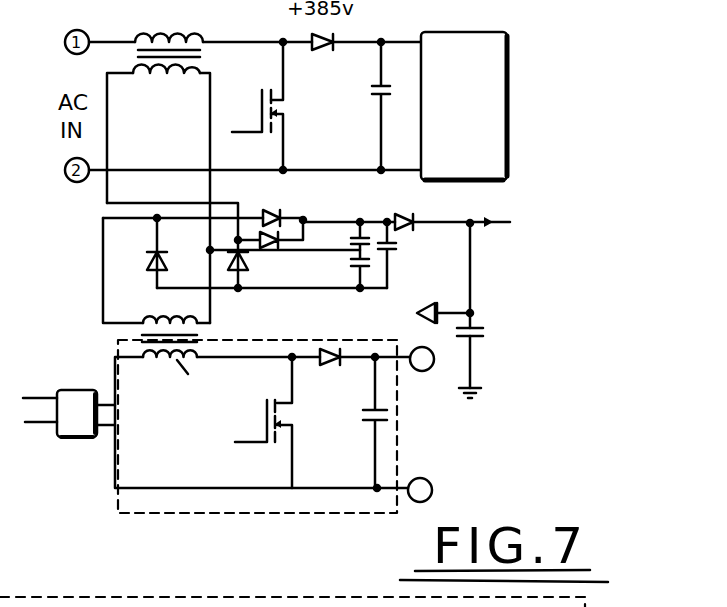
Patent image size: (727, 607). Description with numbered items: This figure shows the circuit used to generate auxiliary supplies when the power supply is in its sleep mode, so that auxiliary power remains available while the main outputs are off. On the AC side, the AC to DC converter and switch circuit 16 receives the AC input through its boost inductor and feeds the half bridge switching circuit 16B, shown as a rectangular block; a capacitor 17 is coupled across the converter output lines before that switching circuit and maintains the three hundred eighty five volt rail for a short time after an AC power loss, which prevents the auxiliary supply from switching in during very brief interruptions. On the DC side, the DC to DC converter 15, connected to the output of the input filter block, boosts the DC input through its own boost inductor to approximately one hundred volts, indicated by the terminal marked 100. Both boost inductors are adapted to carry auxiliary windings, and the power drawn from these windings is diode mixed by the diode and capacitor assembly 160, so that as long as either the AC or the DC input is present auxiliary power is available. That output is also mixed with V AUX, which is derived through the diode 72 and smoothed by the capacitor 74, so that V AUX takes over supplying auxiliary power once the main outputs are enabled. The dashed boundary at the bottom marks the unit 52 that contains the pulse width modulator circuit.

The AC to DC converter and switch circuit 16 is at (160, 32).
The half bridge switching circuit 16B is at (510, 88).
The capacitor 17 is at (367, 85).
The diode and capacitor assembly 160 is at (362, 214).
The diode 72 is at (441, 295).
The capacitor 74 is at (478, 348).
The line voltage output 100 is at (375, 357).
The DC to DC converter 15 is at (411, 438).
The unit 52 is at (252, 595).